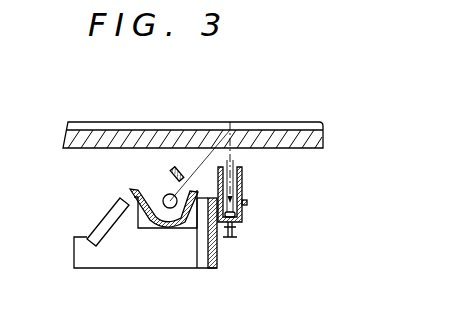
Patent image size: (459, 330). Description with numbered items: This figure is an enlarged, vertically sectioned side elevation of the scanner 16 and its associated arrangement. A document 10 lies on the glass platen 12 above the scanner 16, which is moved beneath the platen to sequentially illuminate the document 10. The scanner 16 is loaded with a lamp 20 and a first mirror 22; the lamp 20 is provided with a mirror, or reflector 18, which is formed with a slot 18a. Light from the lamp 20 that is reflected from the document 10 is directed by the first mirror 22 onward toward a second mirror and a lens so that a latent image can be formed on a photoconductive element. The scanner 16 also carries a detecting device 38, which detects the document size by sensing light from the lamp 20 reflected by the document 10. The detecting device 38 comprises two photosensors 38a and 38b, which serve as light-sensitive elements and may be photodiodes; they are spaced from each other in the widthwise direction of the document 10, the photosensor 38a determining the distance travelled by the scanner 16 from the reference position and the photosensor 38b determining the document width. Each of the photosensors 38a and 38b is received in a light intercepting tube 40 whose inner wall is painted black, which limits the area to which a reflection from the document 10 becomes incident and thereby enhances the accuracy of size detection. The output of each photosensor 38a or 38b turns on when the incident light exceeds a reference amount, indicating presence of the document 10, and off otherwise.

The document 10 is at (118, 127).
The glass platen 12 is at (178, 137).
The scanner 16 is at (103, 258).
The mirror 18 is at (196, 228).
The slot 18a is at (180, 183).
The lamp 20 is at (170, 209).
The first mirror 22 is at (100, 222).
The detecting device 38 is at (262, 203).
The photosensor 38a is at (243, 218).
The photosensor 38b is at (292, 227).
The light intercepting tube 40 is at (243, 181).